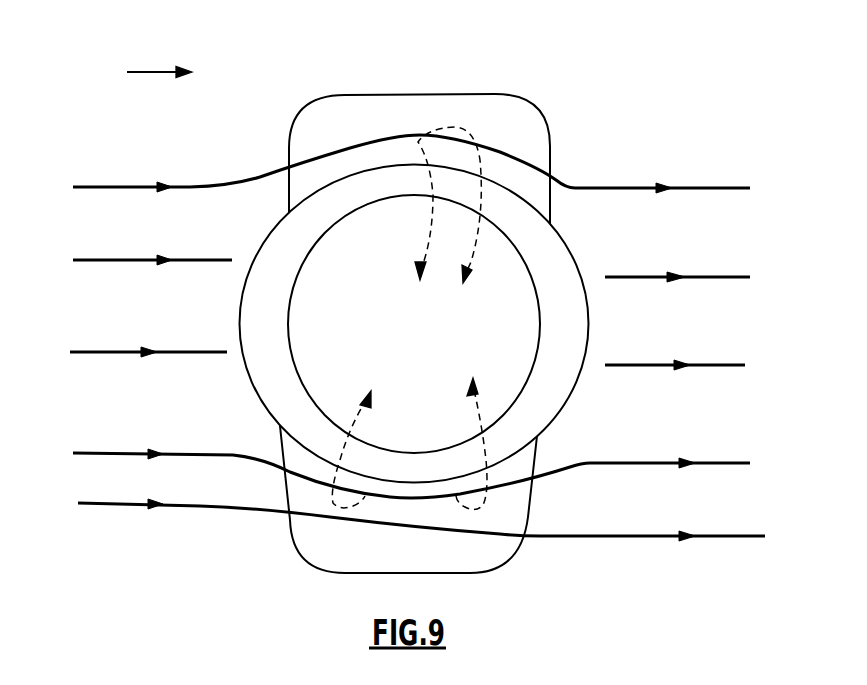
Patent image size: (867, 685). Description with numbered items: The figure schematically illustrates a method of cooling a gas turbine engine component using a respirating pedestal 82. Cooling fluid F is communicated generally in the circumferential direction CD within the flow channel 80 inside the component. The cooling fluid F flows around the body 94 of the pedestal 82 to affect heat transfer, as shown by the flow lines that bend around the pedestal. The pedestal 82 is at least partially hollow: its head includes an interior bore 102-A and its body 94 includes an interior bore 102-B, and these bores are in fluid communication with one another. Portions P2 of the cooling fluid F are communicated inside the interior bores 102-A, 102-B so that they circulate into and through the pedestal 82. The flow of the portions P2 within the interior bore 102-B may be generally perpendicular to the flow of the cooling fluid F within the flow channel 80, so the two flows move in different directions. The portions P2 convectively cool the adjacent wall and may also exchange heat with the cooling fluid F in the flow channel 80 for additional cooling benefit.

The pedestal 82 is at (420, 76).
The flow channel 80 is at (153, 157).
The body 94 is at (562, 258).
The interior bore 102-A is at (502, 116).
The interior bore 102-B is at (452, 329).
The portion of the cooling fluid P2 is at (413, 152).
The cooling fluid F is at (202, 187).
The circumferential direction CD is at (152, 72).